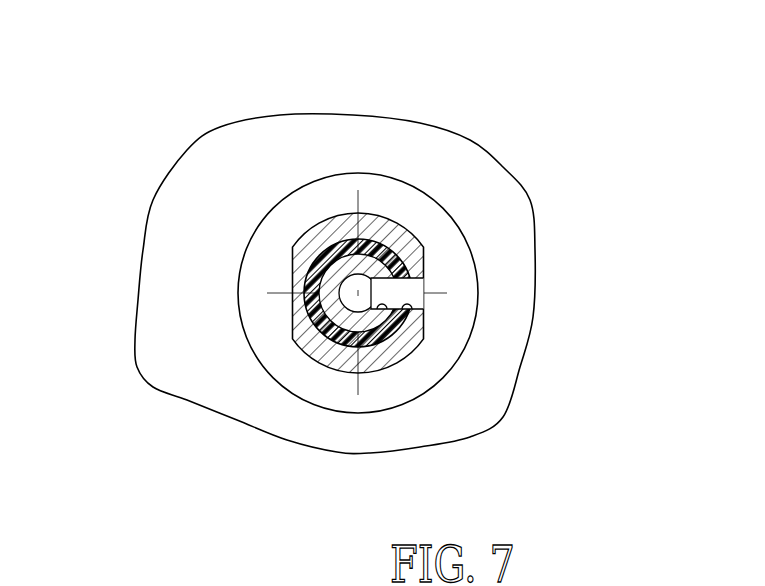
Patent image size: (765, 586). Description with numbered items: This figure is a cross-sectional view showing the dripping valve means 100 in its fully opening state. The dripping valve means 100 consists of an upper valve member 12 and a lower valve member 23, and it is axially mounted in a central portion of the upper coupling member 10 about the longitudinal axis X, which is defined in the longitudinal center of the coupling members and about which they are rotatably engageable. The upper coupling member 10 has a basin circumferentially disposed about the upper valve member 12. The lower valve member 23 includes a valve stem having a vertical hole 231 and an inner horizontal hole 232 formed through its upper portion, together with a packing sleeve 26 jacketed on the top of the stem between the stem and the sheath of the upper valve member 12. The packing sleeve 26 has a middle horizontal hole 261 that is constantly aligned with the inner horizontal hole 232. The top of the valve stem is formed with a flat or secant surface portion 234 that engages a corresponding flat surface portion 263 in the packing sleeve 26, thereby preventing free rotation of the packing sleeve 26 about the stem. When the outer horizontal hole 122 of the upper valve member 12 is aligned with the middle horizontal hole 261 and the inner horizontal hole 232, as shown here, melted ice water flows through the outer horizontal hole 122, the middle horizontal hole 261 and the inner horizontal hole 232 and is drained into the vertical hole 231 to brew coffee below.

The dripping valve means 100 is at (235, 49).
The upper coupling member 10 is at (448, 148).
The upper valve member 12 is at (353, 223).
The outer horizontal hole 122 is at (413, 283).
The lower valve member 23 is at (323, 250).
The vertical hole 231 is at (308, 305).
The inner horizontal hole 232 is at (392, 345).
The flat or secant surface portion 234 is at (387, 227).
The packing sleeve 26 is at (407, 233).
The middle horizontal hole 261 is at (418, 296).
The flat surface portion 263 is at (367, 352).
The longitudinal axis X is at (358, 293).